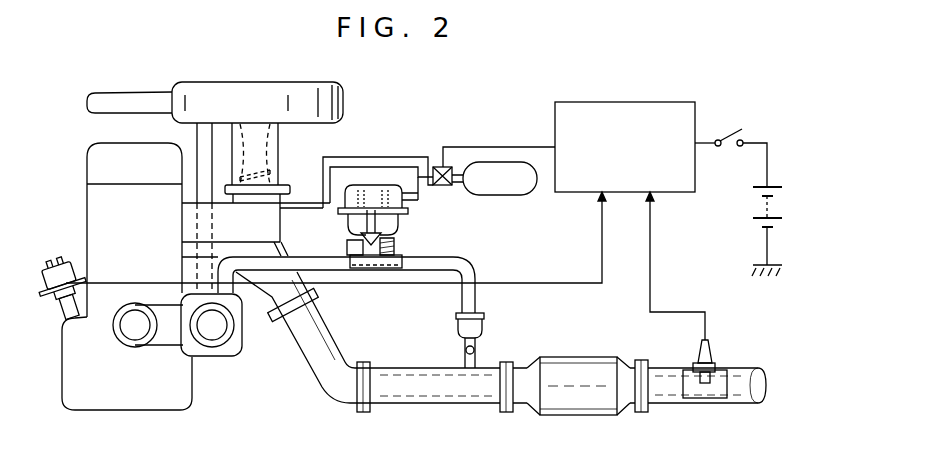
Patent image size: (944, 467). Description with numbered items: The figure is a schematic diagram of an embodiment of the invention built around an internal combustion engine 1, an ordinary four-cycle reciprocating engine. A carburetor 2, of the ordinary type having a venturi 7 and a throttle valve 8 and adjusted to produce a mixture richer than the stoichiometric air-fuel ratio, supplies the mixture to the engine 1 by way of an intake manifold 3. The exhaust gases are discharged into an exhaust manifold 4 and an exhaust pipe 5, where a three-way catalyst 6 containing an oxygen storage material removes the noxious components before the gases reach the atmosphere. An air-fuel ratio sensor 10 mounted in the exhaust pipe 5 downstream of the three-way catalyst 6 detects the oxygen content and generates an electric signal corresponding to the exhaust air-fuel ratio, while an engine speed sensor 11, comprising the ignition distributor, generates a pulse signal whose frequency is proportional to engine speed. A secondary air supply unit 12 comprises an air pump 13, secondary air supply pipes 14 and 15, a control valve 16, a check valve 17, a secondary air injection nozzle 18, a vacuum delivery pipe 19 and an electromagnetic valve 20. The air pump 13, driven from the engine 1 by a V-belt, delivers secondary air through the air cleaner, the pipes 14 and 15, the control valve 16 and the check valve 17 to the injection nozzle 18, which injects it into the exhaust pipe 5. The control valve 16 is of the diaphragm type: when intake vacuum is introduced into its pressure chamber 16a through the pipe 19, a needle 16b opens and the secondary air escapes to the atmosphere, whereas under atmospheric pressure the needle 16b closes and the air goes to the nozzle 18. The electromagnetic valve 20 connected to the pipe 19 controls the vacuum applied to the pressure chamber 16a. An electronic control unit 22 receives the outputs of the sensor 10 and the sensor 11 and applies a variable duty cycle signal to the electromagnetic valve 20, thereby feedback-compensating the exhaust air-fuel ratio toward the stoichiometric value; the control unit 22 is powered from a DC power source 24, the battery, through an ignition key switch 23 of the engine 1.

The internal combustion engine 1 is at (80, 176).
The carburetor 2 is at (279, 133).
The intake manifold 3 is at (280, 216).
The exhaust manifold 4 is at (265, 287).
The exhaust pipe 5 is at (397, 403).
The three-way catalyst 6 is at (595, 417).
The venturi 7 is at (268, 153).
The throttle valve 8 is at (272, 172).
The air-fuel ratio sensor 10 is at (708, 356).
The engine speed sensor 11 is at (62, 249).
The secondary air supply unit 12 is at (407, 196).
The air pump 13 is at (218, 357).
The secondary air supply pipe 14 is at (197, 142).
The secondary air supply pipe 15 is at (325, 257).
The control valve 16 is at (397, 231).
The pressure chamber 16a is at (360, 185).
The needle 16b is at (405, 233).
The check valve 17 is at (483, 322).
The secondary air injection nozzle 18 is at (477, 352).
The vacuum delivery pipe 19 is at (398, 158).
The electromagnetic valve 20 is at (443, 186).
The electronic control unit 22 is at (645, 101).
The ignition key switch 23 is at (733, 128).
The DC power source 24 is at (760, 203).